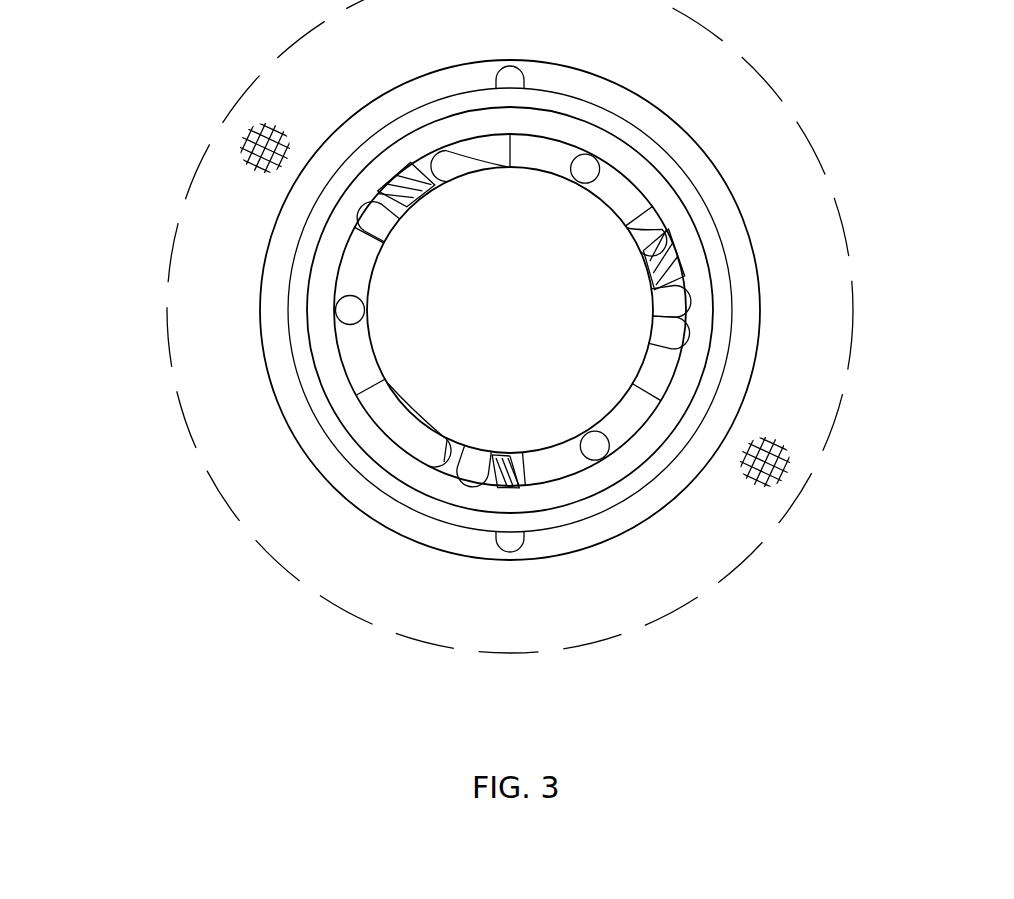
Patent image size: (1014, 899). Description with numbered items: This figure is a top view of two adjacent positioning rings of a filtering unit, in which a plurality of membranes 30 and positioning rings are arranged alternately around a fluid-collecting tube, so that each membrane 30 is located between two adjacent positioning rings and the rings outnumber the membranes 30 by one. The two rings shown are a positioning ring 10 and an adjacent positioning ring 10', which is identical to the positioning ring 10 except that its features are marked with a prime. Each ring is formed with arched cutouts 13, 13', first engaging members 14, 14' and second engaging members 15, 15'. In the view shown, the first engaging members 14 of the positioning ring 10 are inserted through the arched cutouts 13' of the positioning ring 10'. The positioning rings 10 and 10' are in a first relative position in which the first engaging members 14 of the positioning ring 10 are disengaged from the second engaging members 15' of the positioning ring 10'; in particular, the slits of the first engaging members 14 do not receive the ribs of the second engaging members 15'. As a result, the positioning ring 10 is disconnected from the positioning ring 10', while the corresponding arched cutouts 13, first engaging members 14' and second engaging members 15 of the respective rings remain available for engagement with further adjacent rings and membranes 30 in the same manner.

The positioning ring 10 is at (510, 310).
The positioning ring 10' is at (510, 310).
The arched cutout 13 is at (554, 570).
The arched cutout 13' is at (375, 562).
The first engaging member 14 is at (344, 539).
The first engaging member 14' is at (316, 490).
The second engaging member 15 is at (476, 588).
The second engaging member 15' is at (434, 578).
The membrane 30 is at (848, 226).